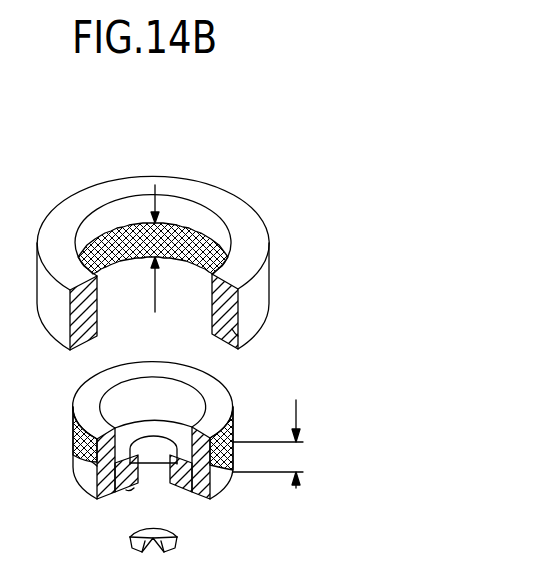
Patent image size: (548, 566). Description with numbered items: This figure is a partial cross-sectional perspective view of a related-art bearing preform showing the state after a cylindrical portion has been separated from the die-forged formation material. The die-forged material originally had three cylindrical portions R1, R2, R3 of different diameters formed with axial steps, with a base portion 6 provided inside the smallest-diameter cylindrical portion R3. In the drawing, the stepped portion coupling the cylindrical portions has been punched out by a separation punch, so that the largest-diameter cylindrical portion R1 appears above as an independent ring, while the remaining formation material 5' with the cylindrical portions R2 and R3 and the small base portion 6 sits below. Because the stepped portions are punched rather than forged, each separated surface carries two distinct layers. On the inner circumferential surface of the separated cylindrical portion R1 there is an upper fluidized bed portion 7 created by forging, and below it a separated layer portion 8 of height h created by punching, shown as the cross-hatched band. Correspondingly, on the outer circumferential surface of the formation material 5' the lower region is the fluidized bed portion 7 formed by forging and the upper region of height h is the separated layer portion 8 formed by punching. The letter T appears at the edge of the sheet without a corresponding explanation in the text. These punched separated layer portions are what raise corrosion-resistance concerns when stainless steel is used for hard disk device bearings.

The fluidized bed portion 7 is at (197, 214).
The separated layer portion 8 is at (117, 252).
The base portion 6 is at (170, 535).
The formation material 5' is at (34, 396).
The cylindrical portion R1 is at (230, 328).
The cylindrical portion R2 is at (97, 460).
The cylindrical portion R3 is at (130, 490).
The height h is at (236, 336).
The label T is at (13, 109).